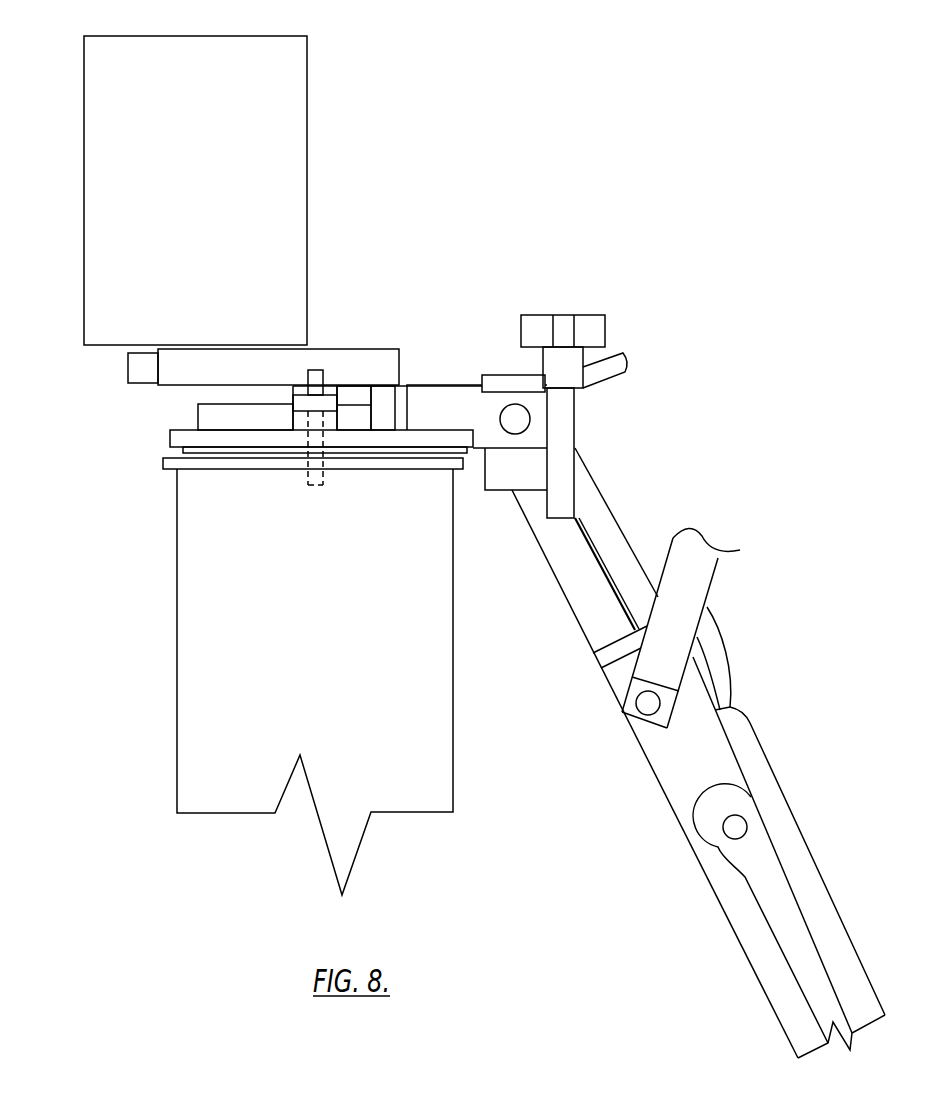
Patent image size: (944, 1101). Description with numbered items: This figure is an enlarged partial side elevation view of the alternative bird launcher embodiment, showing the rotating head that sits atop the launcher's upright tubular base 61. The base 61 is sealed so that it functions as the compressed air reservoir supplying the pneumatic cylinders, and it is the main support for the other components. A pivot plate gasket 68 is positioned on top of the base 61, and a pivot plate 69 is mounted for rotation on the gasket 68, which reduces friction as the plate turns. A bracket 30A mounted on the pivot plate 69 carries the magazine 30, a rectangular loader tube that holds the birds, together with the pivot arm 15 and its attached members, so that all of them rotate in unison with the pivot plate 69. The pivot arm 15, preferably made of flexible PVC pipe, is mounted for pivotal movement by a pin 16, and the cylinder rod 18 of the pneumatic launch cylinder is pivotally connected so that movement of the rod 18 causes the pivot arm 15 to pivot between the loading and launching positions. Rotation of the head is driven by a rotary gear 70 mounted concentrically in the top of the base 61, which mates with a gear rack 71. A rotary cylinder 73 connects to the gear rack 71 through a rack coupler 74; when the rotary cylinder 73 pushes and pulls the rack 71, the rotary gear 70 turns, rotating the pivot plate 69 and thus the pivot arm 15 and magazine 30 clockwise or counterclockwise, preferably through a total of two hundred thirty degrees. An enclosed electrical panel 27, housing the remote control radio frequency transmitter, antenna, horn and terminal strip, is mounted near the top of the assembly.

The pivot arm 15 is at (795, 927).
The pin 16 is at (735, 827).
The cylinder rod 18 is at (697, 587).
The electrical panel 27 is at (240, 153).
The magazine 30 is at (580, 575).
The bracket 30A is at (452, 402).
The upright tubular base 61 is at (190, 600).
The pivot plate gasket 68 is at (220, 450).
The pivot plate 69 is at (185, 436).
The rotary gear 70 is at (330, 401).
The gear rack 71 is at (213, 416).
The rotary cylinder 73 is at (176, 362).
The rack coupler 74 is at (565, 423).